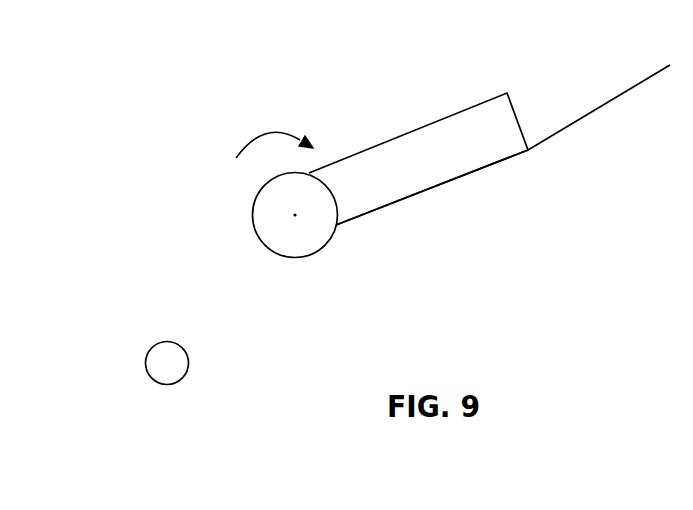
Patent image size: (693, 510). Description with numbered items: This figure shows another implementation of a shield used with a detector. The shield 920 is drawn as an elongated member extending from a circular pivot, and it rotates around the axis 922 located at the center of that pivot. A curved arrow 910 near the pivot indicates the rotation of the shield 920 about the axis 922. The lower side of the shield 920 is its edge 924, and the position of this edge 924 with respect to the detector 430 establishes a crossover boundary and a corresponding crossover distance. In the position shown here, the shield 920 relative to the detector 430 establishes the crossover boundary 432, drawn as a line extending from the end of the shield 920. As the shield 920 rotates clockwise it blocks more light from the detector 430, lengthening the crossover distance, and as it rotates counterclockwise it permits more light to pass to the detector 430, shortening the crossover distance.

The rotation direction 910 is at (274, 126).
The shield 920 is at (432, 123).
The axis 922 is at (252, 212).
The edge 924 is at (418, 194).
The crossover boundary 432 is at (598, 110).
The detector 430 is at (145, 358).